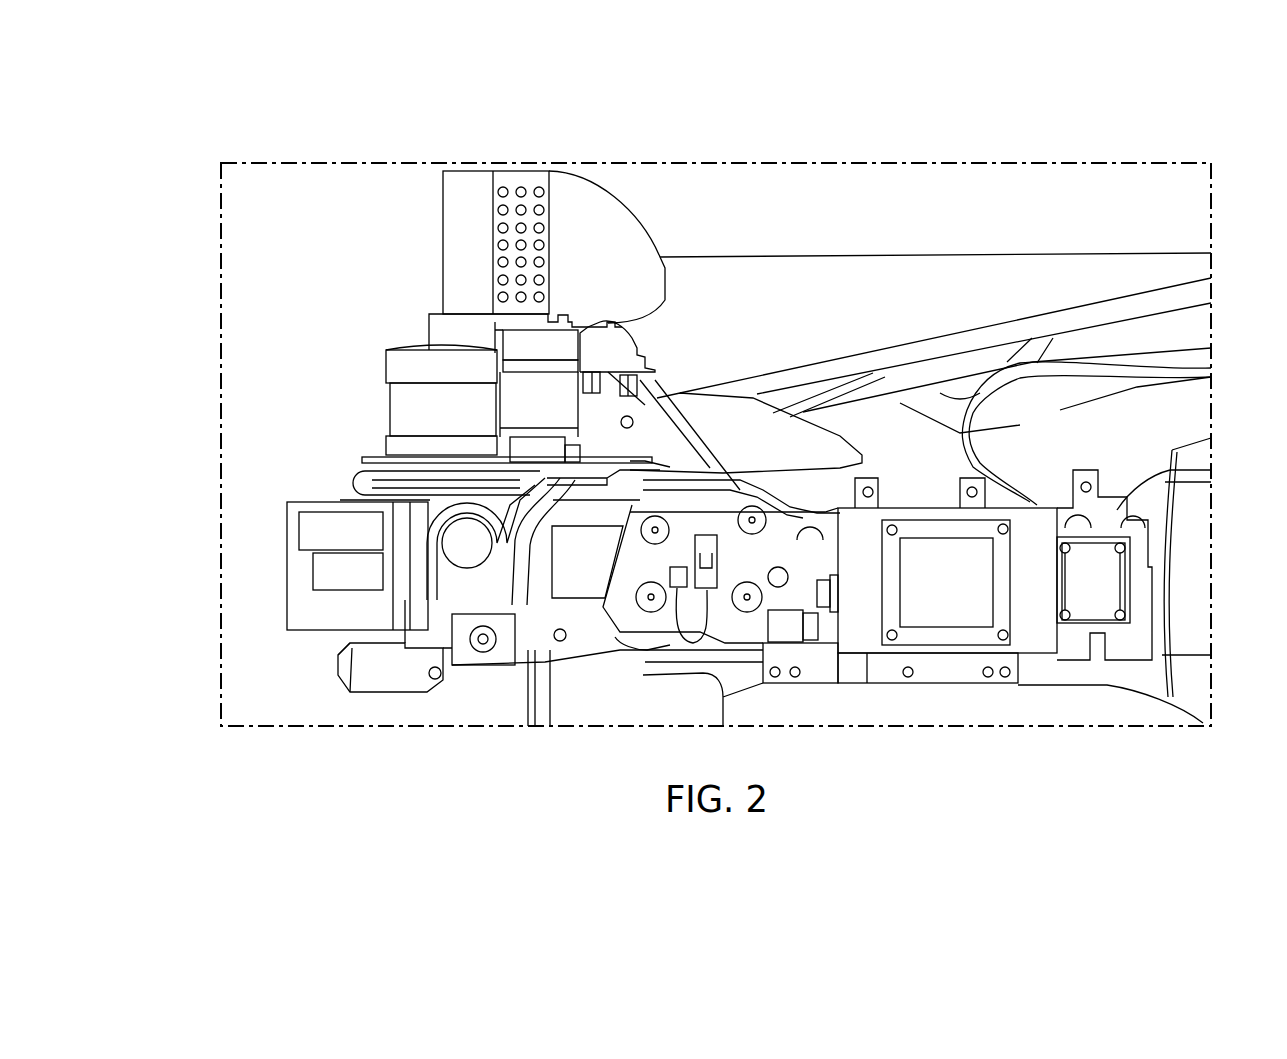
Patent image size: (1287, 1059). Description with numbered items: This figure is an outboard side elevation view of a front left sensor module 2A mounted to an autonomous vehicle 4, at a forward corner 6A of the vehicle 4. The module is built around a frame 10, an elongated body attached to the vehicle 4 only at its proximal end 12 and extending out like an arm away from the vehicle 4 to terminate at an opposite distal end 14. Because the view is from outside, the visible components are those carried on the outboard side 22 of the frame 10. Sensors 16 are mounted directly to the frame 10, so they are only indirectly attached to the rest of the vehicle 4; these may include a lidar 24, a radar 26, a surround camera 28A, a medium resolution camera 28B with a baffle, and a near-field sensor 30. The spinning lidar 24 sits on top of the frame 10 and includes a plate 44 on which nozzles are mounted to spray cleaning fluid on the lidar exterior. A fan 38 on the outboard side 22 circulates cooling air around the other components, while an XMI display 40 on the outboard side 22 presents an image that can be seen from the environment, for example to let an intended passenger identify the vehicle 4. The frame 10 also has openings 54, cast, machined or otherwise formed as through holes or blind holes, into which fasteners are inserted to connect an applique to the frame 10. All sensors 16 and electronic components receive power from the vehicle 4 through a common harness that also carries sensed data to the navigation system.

The front left sensor module 2A is at (1018, 148).
The vehicle 4 is at (1001, 279).
The forward right corner 6A is at (1103, 762).
The frame 10 is at (1170, 472).
The proximal end 12 is at (1183, 580).
The distal end 14 is at (247, 617).
The sensors 16 is at (487, 467).
The outboard side 22 is at (597, 628).
The lidar 24 is at (403, 403).
The radar 26 is at (295, 568).
The surround camera 28A is at (350, 677).
The medium resolution camera 28B is at (465, 657).
The near-field sensor 30 is at (572, 585).
The fan 38 is at (1108, 578).
The XMI display 40 is at (927, 617).
The plate 44 is at (380, 455).
The opening 54 is at (870, 486).